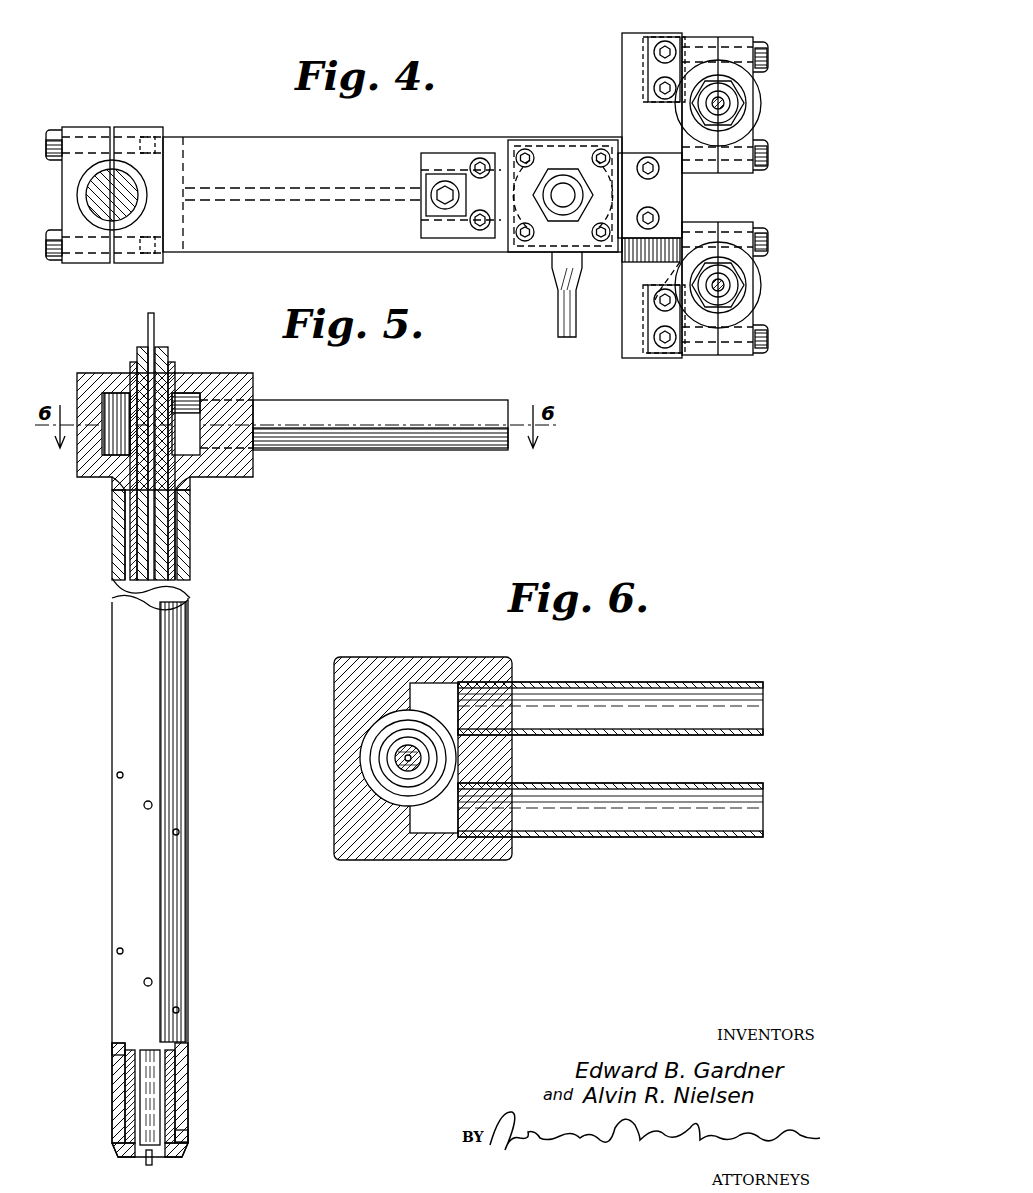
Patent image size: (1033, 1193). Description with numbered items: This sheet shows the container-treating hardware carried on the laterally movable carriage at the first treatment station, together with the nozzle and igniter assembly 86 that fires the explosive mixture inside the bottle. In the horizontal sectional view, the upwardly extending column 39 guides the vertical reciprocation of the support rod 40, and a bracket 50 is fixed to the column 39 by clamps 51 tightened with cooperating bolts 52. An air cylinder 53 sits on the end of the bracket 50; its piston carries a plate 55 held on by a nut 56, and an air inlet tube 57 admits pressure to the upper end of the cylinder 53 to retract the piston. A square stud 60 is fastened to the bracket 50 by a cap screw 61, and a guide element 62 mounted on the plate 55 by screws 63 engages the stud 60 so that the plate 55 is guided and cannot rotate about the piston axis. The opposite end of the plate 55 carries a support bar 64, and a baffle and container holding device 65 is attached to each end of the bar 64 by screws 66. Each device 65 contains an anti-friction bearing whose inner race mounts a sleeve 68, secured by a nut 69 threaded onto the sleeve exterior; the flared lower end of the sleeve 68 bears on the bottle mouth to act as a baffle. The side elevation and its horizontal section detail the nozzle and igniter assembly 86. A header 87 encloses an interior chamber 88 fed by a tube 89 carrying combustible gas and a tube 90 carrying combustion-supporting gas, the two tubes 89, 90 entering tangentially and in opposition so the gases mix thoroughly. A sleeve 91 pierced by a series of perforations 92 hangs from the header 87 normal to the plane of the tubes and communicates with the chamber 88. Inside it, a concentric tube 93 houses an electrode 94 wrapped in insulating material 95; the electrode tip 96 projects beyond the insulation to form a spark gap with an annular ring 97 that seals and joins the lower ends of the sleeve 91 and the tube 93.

In FIG. 4, the column 39 is at (140, 213).
In FIG. 4, the support rod 40 is at (128, 183).
In FIG. 4, the bracket 50 is at (315, 146).
In FIG. 4, the clamps 51 is at (95, 258).
In FIG. 4, the bolts 52 is at (52, 160).
In FIG. 4, the air cylinder 53 is at (562, 158).
In FIG. 4, the plate 55 is at (505, 240).
In FIG. 4, the nut 56 is at (558, 175).
In FIG. 4, the air inlet tube 57 is at (556, 310).
In FIG. 4, the square stud 60 is at (425, 208).
In FIG. 4, the cap screw 61 is at (424, 180).
In FIG. 4, the guide element 62 is at (450, 240).
In FIG. 4, the screws 63 is at (480, 157).
In FIG. 4, the support bar 64 is at (684, 192).
In FIG. 4, the baffle and container holding device 65 is at (749, 41).
In FIG. 4, the screws 66 is at (652, 88).
In FIG. 4, the sleeve 68 is at (725, 110).
In FIG. 4, the nut 69 is at (740, 95).
In FIG. 4, the nozzle and igniter assembly 86 is at (735, 105).
In FIG. 5, the nozzle and igniter assembly 86 is at (221, 369).
In FIG. 6, the nozzle and igniter assembly 86 is at (394, 651).
In FIG. 5, the header 87 is at (232, 478).
In FIG. 6, the header 87 is at (452, 657).
In FIG. 5, the interior chamber 88 is at (116, 393).
In FIG. 6, the interior chamber 88 is at (368, 738).
In FIG. 5, the tube 89 is at (372, 400).
In FIG. 6, the tube 89 is at (634, 682).
In FIG. 6, the tube 90 is at (674, 838).
In FIG. 5, the sleeve 91 is at (110, 728).
In FIG. 6, the sleeve 91 is at (382, 785).
In FIG. 5, the perforations 92 is at (118, 778).
In FIG. 5, the tube 93 is at (177, 545).
In FIG. 6, the tube 93 is at (388, 770).
In FIG. 5, the electrode 94 is at (148, 330).
In FIG. 6, the electrode 94 is at (410, 762).
In FIG. 5, the insulating material 95 is at (160, 352).
In FIG. 6, the insulating material 95 is at (396, 757).
In FIG. 5, the tip 96 is at (146, 1160).
In FIG. 5, the annular ring 97 is at (180, 1160).